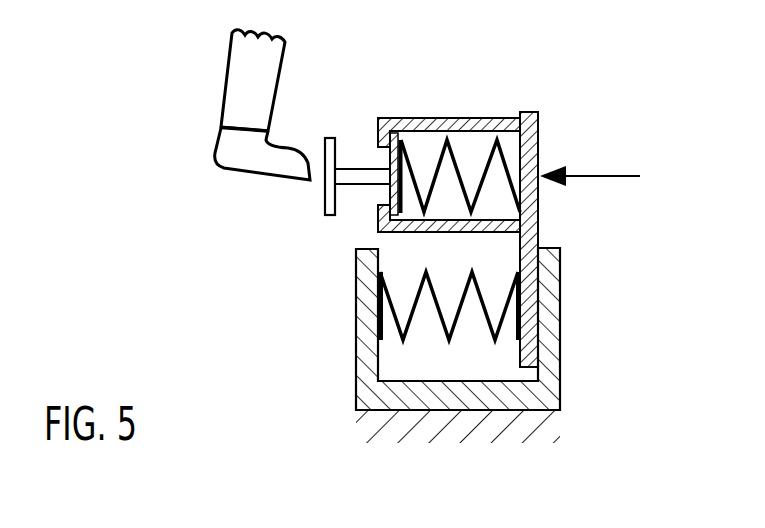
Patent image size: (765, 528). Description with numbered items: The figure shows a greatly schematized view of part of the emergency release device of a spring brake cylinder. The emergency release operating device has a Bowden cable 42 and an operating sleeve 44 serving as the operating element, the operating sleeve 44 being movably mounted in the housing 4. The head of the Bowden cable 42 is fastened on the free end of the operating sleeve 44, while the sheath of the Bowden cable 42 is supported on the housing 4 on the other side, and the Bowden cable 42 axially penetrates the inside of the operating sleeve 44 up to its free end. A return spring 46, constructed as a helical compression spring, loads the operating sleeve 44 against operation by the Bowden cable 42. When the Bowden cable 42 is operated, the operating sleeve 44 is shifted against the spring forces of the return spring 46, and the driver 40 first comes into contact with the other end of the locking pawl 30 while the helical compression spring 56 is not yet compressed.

The housing 4 is at (548, 382).
The locking pawl 30 is at (234, 73).
The driver 40 is at (325, 202).
The Bowden cable 42 is at (622, 175).
The operating sleeve 44 is at (538, 122).
The return spring 46 is at (440, 312).
The helical compression spring 56 is at (483, 167).